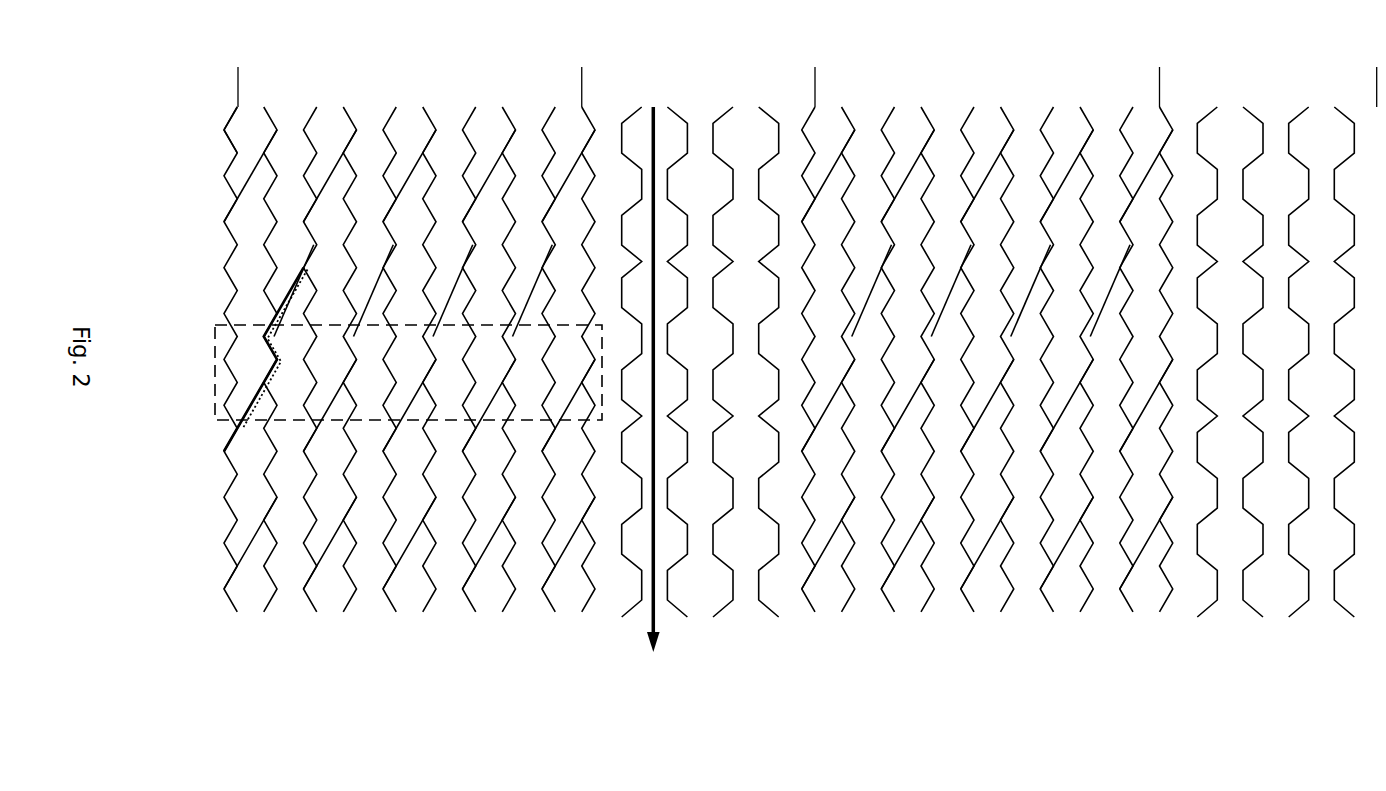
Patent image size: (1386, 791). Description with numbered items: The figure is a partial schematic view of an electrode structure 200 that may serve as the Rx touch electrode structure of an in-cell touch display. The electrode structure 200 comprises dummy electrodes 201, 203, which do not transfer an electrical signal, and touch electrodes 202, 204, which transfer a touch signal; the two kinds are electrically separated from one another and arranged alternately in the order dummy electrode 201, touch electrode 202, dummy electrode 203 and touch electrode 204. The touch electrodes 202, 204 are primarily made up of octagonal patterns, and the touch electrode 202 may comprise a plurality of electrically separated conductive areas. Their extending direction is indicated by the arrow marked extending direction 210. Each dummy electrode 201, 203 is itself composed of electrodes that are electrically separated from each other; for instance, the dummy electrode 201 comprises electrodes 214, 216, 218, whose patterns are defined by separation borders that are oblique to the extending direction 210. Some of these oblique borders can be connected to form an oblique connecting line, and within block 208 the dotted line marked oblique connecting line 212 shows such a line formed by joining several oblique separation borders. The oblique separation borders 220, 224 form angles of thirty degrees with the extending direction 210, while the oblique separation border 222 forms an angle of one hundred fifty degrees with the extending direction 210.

The electrode structure 200 is at (338, 47).
The dummy electrode 201 is at (240, 87).
The touch electrode 202 is at (584, 87).
The dummy electrode 203 is at (817, 87).
The touch electrode 204 is at (1162, 87).
The block 208 is at (210, 338).
The extending direction 210 is at (659, 400).
The oblique connecting line 212 is at (237, 425).
The electrode 214 is at (253, 215).
The electrode 216 is at (253, 492).
The electrode 218 is at (300, 254).
The oblique separation border 220 is at (228, 122).
The oblique separation border 222 is at (228, 134).
The oblique separation border 224 is at (253, 172).